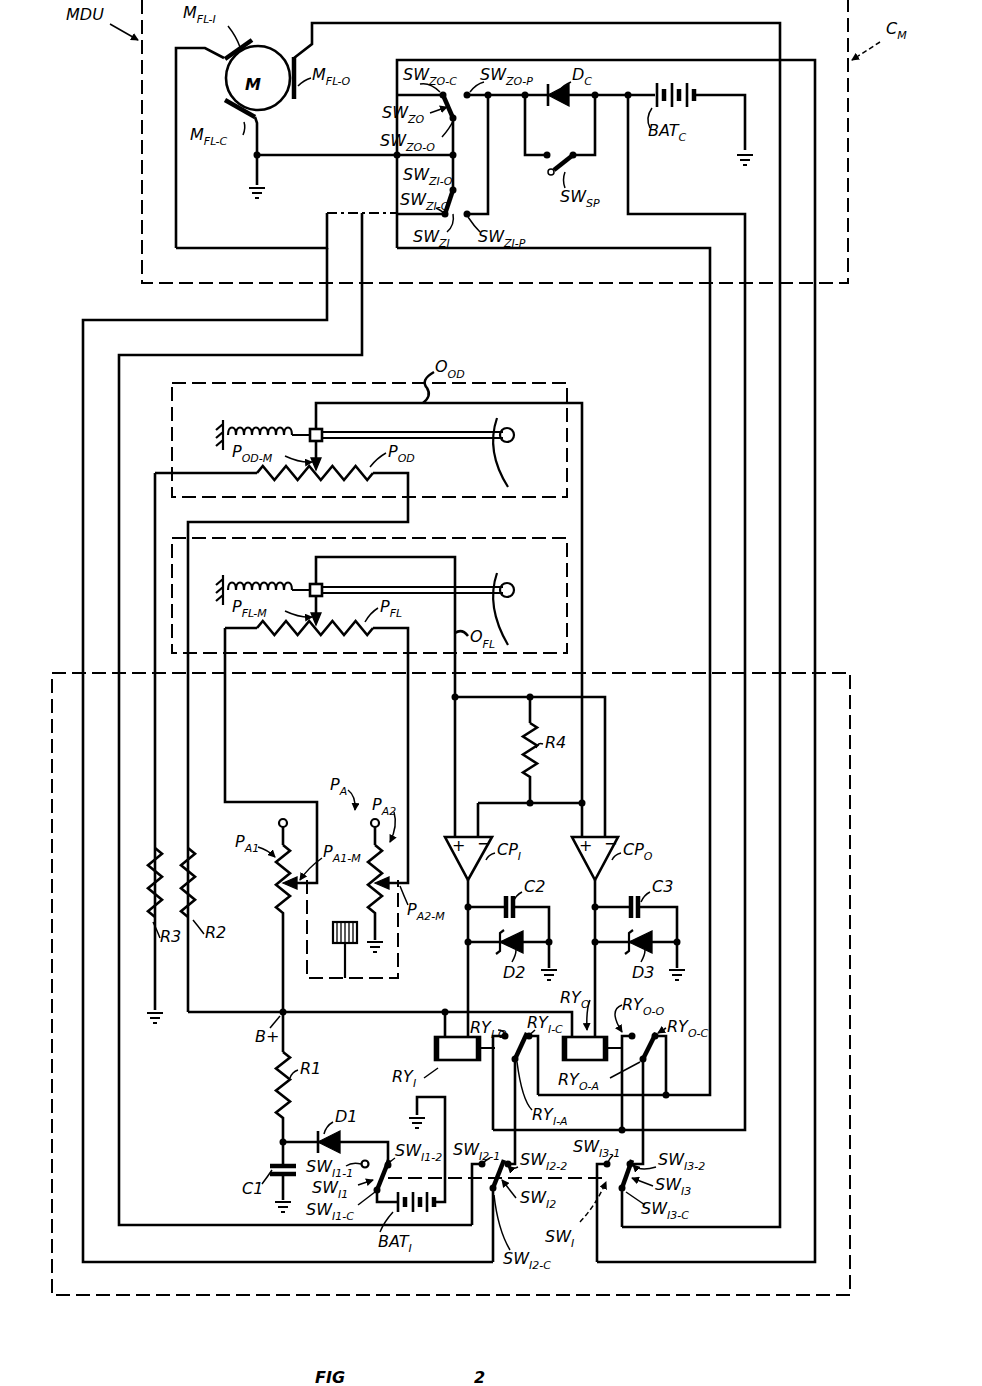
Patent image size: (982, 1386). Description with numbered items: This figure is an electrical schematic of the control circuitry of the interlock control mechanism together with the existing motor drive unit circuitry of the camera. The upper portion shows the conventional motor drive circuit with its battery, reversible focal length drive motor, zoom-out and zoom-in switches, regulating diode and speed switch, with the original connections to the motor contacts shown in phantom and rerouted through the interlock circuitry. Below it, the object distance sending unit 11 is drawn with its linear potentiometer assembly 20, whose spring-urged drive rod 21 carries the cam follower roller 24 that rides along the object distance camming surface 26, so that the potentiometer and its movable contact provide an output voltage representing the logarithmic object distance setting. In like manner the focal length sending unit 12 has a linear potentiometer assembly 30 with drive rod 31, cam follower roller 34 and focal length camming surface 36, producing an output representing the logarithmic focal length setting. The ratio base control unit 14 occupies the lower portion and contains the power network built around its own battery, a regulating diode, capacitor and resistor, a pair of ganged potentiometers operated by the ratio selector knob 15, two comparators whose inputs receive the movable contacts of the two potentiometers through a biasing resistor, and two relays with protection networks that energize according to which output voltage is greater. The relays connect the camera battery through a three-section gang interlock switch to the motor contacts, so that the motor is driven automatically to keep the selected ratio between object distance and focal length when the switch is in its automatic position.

The object distance sending unit 11 is at (530, 386).
The focal length sending unit 12 is at (530, 541).
The ratio base control unit 14 is at (826, 678).
The ratio selector knob 15 is at (338, 944).
The linear potentiometer assembly 20 is at (307, 425).
The drive rod 21 is at (447, 440).
The cam follower roller 24 is at (515, 436).
The object distance camming surface 26 is at (508, 480).
The linear potentiometer assembly 30 is at (307, 580).
The drive rod 31 is at (467, 595).
The cam follower roller 34 is at (515, 592).
The focal length camming surface 36 is at (511, 634).